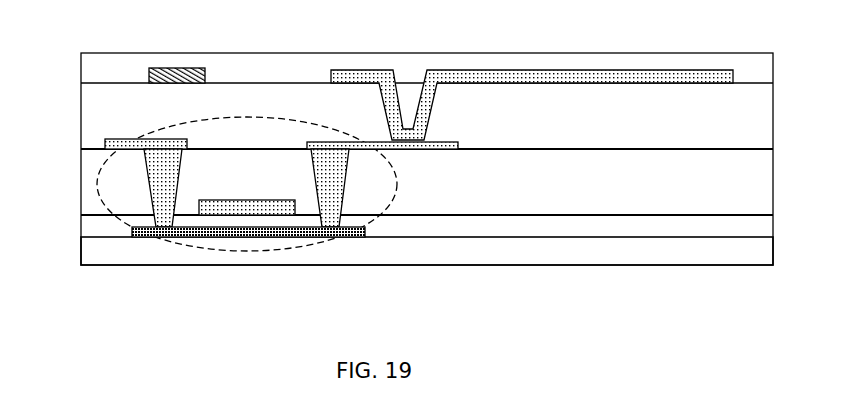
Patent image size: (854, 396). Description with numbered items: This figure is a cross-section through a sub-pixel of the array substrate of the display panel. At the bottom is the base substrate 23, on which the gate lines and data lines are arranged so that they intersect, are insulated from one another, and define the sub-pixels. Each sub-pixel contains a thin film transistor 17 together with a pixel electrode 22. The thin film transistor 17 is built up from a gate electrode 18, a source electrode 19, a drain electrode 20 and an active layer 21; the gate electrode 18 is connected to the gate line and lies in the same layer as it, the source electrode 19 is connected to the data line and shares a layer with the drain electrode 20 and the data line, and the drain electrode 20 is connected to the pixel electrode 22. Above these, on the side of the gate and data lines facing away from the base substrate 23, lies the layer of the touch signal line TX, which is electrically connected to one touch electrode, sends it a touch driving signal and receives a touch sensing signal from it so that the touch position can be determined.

The touch signal line TX is at (186, 68).
The pixel electrode 22 is at (459, 68).
The drain electrode 20 is at (368, 146).
The source electrode 19 is at (105, 149).
The gate electrode 18 is at (278, 202).
The thin film transistor 17 is at (102, 198).
The base substrate 23 is at (98, 260).
The active layer 21 is at (227, 236).